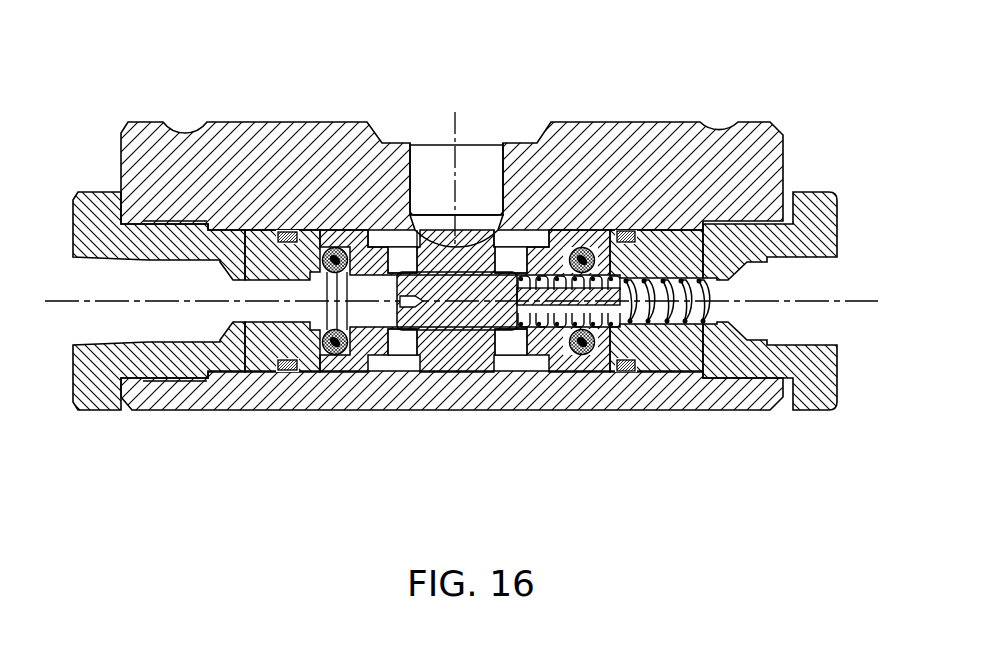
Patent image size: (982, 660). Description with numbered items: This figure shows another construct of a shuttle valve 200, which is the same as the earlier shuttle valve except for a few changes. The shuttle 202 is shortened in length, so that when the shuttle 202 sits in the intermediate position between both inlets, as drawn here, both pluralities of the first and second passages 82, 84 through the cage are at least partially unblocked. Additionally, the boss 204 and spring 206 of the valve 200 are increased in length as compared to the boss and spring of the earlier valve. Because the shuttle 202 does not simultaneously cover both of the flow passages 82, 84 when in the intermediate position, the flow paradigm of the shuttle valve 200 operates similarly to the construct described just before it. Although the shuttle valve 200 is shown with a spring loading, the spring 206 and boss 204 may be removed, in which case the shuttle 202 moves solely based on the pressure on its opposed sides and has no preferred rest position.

The shuttle valve 200 is at (752, 83).
The first passages 82 is at (400, 260).
The second passages 84 is at (512, 260).
The shuttle 202 is at (455, 315).
The boss 204 is at (600, 307).
The spring 206 is at (692, 278).